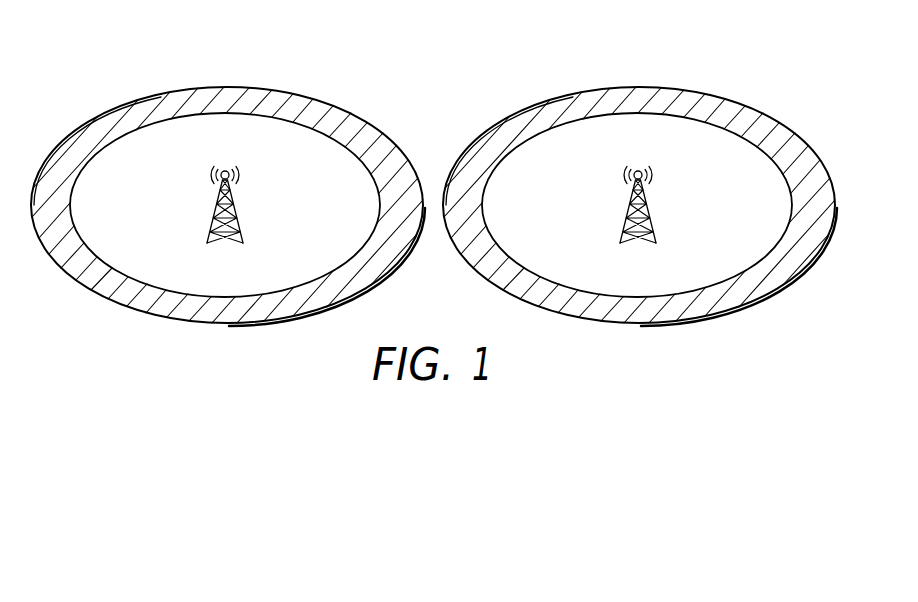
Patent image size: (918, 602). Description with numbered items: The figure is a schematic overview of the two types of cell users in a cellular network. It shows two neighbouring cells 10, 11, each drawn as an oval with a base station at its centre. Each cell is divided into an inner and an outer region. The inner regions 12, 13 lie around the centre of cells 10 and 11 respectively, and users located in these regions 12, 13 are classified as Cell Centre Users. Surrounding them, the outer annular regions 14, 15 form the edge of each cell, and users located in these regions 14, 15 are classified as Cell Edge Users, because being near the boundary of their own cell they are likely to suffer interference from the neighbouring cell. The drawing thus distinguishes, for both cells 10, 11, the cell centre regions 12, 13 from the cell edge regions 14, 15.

The cell 10 is at (108, 85).
The cell 11 is at (523, 85).
The region 12 is at (272, 142).
The region 13 is at (687, 142).
The region 14 is at (358, 119).
The region 15 is at (775, 119).